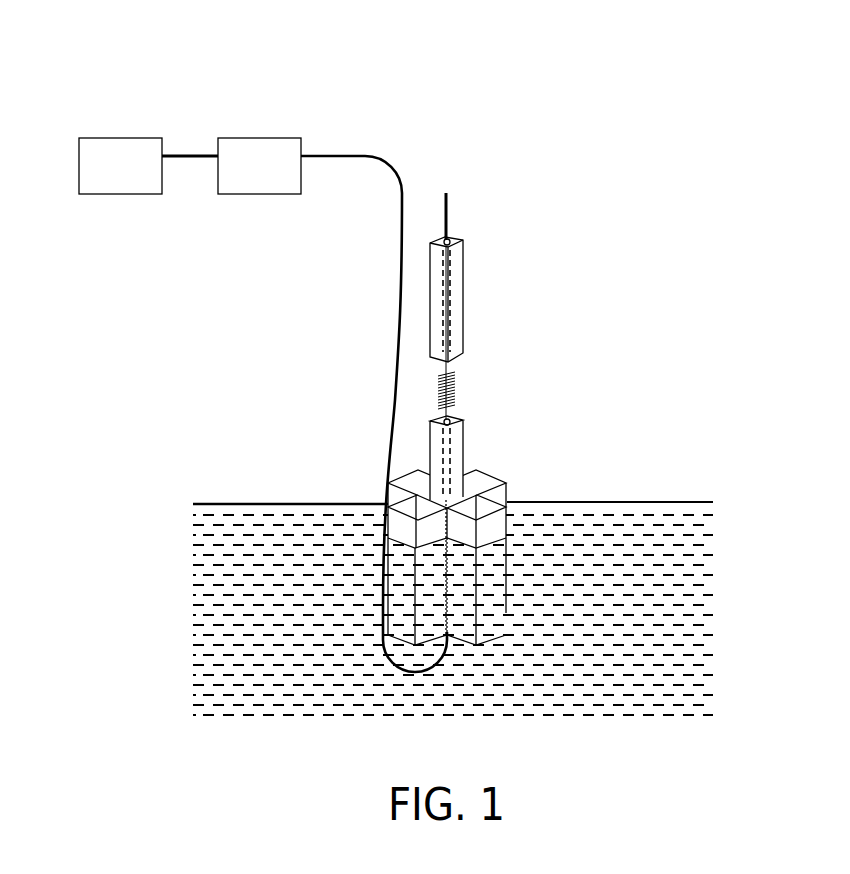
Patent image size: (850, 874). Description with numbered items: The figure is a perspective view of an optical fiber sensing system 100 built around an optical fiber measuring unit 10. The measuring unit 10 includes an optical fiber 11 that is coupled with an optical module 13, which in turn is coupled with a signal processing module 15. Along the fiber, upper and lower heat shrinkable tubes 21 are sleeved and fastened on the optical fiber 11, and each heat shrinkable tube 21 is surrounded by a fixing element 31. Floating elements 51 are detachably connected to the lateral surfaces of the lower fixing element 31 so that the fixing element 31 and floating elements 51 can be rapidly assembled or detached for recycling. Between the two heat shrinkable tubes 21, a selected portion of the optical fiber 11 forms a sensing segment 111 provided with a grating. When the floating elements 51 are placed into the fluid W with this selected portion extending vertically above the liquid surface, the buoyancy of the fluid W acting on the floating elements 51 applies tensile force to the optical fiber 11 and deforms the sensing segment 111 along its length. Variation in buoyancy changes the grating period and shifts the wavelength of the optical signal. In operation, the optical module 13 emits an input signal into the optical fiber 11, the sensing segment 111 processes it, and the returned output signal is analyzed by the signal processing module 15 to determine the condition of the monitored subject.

The optical fiber sensing system 100 is at (832, 72).
The optical fiber measuring unit 10 is at (266, 96).
The optical fiber 11 is at (397, 386).
The optical module 13 is at (262, 186).
The signal processing module 15 is at (112, 186).
The heat shrinkable tube 21 is at (452, 325).
The fixing element 31 is at (457, 271).
The sensing segment 111 is at (455, 392).
The floating element 51 is at (507, 492).
The fluid W is at (705, 640).